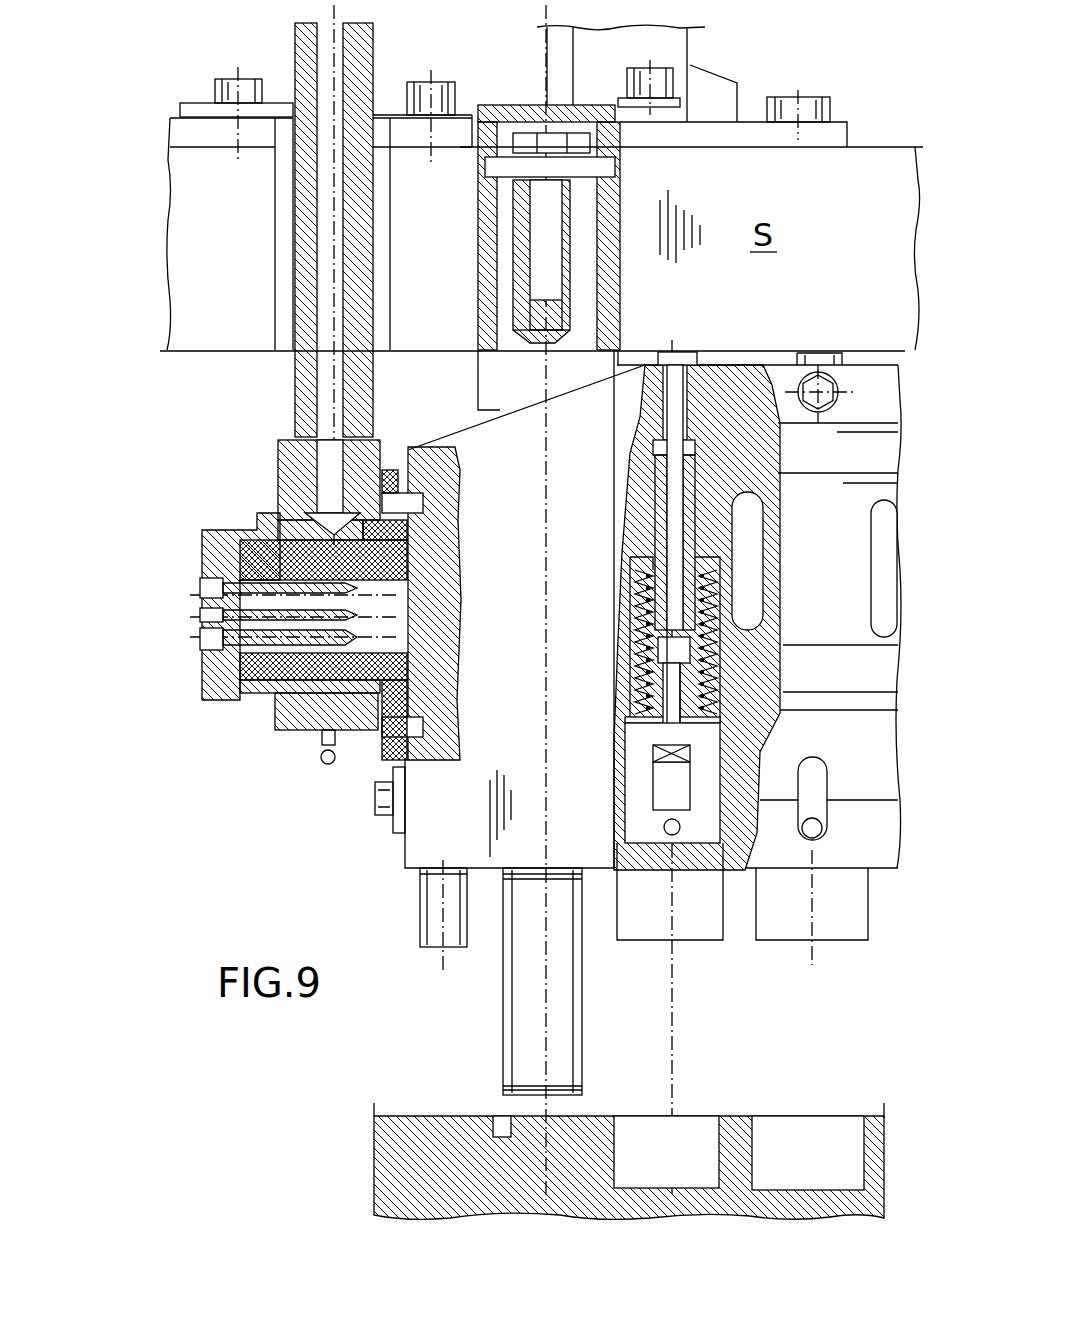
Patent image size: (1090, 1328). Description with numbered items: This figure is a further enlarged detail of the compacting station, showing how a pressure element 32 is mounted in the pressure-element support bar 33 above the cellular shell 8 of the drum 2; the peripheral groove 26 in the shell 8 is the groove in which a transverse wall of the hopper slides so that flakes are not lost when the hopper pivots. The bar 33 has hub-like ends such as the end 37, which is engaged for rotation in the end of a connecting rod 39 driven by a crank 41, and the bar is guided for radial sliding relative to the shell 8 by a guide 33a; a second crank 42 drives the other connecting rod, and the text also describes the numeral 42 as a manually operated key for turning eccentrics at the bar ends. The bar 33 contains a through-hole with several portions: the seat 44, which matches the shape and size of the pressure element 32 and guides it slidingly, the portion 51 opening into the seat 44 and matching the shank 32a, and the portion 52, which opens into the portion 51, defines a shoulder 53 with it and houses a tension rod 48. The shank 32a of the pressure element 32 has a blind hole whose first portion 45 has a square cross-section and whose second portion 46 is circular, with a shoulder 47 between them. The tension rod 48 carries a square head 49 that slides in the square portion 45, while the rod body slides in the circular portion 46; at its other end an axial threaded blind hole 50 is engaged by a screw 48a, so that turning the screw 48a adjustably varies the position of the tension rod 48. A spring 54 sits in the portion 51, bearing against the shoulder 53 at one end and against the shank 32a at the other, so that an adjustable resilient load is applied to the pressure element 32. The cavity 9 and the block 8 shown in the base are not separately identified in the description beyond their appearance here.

The drum 2 is at (618, 1124).
The cellular shell 8 is at (735, 1130).
The bore 9 is at (714, 1148).
The peripheral groove 26 is at (502, 1120).
The pressure element 32 is at (700, 933).
The shank 32a is at (682, 772).
The pressure-element support bar 33 is at (848, 573).
The guide 33a is at (556, 1008).
The end of support bar 37 is at (271, 737).
The connecting rod 39 is at (287, 460).
The crank 41 is at (433, 483).
The crank 42 is at (300, 690).
The seat 44 is at (753, 823).
The first portion of blind hole 45 is at (700, 782).
The second portion of blind hole 46 is at (658, 750).
The shoulder 47 is at (660, 762).
The tension rod 48 is at (712, 517).
The screw 48a is at (712, 365).
The square head 49 is at (700, 770).
The threaded blind hole 50 is at (714, 477).
The through-hole portion 51 is at (713, 670).
The through-hole portion 52 is at (657, 510).
The shoulder 53 is at (715, 548).
The spring 54 is at (704, 597).